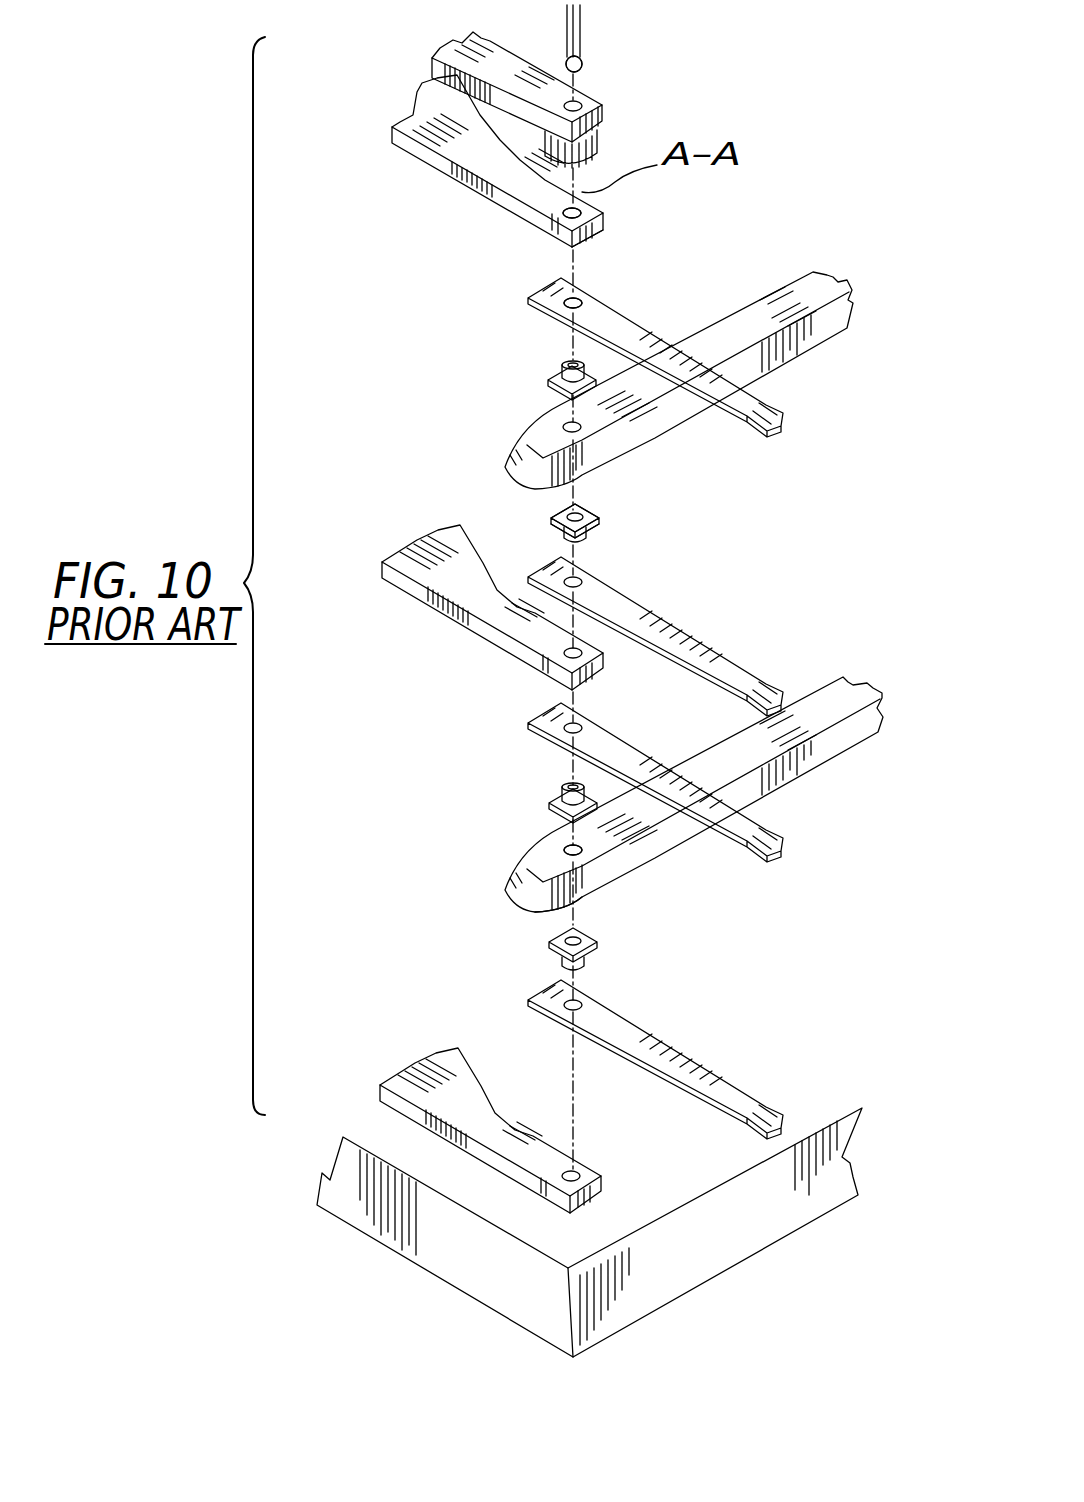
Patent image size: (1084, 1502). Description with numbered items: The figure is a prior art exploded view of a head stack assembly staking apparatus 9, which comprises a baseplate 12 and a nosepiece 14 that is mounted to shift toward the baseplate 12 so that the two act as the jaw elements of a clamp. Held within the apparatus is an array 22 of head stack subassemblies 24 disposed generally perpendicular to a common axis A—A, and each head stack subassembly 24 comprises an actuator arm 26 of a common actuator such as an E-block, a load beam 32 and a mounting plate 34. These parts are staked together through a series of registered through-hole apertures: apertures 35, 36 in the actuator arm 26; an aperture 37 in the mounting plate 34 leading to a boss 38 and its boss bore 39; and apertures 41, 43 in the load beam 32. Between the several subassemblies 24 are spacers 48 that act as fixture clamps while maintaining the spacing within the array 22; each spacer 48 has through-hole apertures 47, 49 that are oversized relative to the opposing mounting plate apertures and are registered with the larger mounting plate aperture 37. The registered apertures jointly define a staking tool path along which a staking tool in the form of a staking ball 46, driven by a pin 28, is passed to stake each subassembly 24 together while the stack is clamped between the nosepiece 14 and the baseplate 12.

The stack assembly apparatus 9 is at (437, 252).
The baseplate 12 is at (665, 1203).
The nosepiece 14 is at (598, 142).
The array 22 is at (472, 627).
The head stack subassembly 24 is at (613, 597).
The actuator arm 26 is at (430, 157).
The pin 28 is at (566, 38).
The load beam 32 is at (597, 333).
The mounting plate 34 is at (580, 510).
The through hole aperture 35 is at (582, 206).
The through hole aperture 36 is at (580, 240).
The aperture 37 is at (573, 508).
The boss 38 is at (605, 530).
The boss bore 39 is at (562, 785).
The aperture 41 is at (583, 296).
The aperture 43 is at (567, 327).
The staking ball 46 is at (582, 64).
The through-hole aperture 47 is at (563, 848).
The spacer 48 is at (610, 868).
The through-hole aperture 49 is at (592, 902).